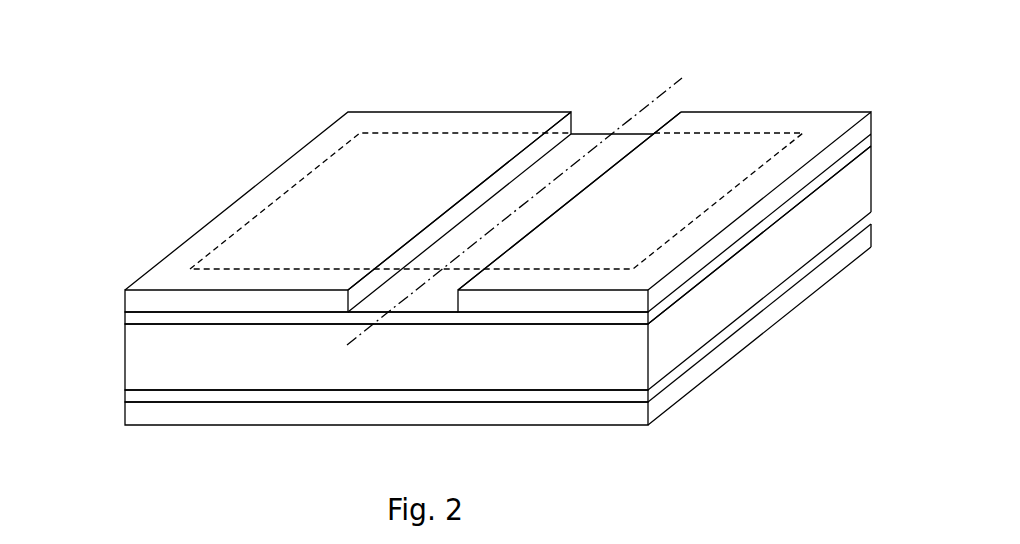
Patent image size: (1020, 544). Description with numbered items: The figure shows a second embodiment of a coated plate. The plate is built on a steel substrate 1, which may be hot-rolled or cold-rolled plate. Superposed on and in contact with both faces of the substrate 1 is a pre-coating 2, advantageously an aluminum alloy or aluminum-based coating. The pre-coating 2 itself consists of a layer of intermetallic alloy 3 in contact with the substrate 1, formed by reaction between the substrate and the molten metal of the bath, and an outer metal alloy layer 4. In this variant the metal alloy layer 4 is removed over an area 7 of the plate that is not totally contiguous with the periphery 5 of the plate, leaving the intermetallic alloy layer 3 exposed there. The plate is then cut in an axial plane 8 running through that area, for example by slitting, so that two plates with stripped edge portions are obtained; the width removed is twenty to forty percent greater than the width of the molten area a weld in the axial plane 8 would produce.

The steel substrate 1 is at (168, 380).
The pre-coating 2 is at (438, 268).
The intermetallic alloy layer 3 is at (147, 318).
The metal alloy layer 4 is at (158, 297).
The periphery 5 is at (290, 168).
The area 7 is at (513, 223).
The axial plane 8 is at (650, 103).